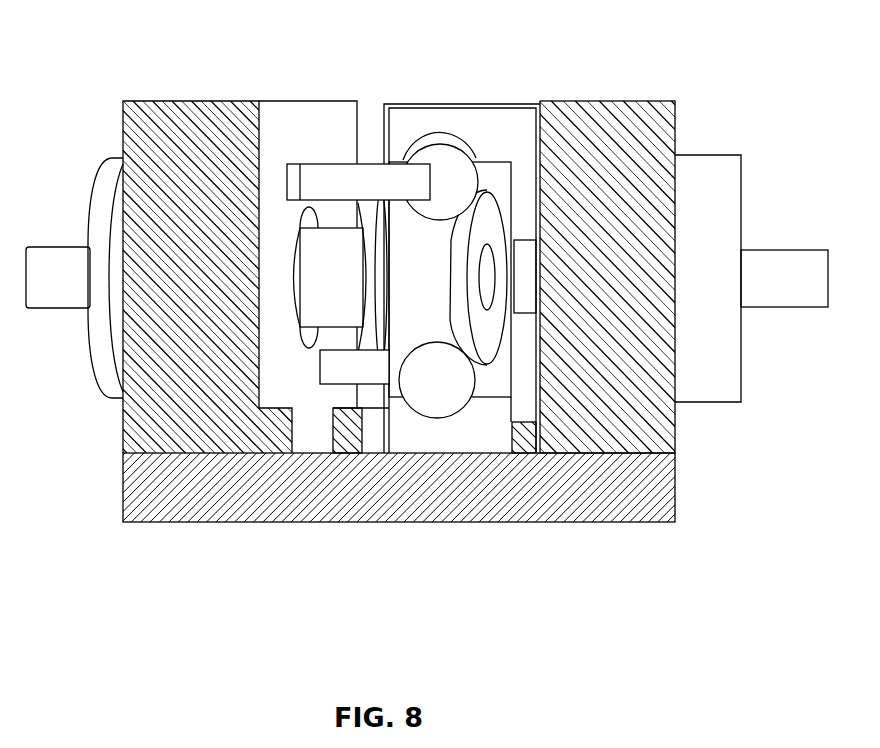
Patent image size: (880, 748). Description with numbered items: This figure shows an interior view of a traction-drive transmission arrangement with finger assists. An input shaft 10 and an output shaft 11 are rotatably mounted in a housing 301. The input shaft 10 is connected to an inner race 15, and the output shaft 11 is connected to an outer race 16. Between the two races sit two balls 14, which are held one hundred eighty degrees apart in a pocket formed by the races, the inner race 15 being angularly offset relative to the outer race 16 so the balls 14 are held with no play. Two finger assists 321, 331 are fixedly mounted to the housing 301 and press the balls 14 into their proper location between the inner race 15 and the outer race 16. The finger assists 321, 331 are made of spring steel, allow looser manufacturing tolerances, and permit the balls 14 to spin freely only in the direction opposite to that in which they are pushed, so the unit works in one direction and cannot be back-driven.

The input shaft 10 is at (63, 297).
The output shaft 11 is at (788, 270).
The ball bearings 14 is at (455, 170).
The inner race 15 is at (510, 195).
The outer race 16 is at (520, 400).
The housing 301 is at (631, 135).
The finger assist 321 is at (335, 180).
The finger assist 331 is at (333, 372).